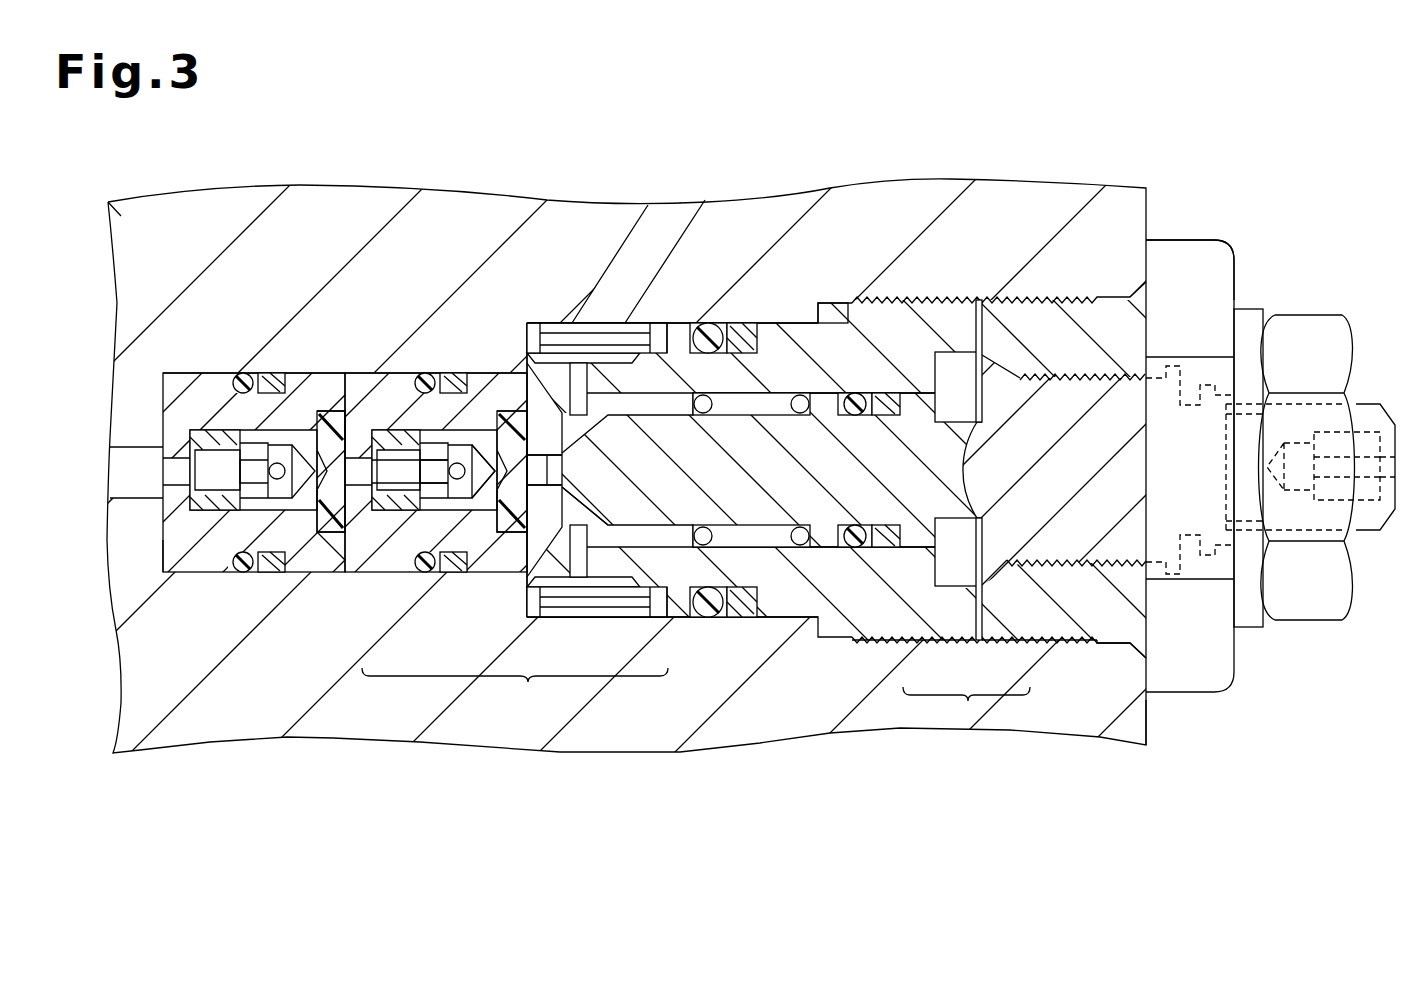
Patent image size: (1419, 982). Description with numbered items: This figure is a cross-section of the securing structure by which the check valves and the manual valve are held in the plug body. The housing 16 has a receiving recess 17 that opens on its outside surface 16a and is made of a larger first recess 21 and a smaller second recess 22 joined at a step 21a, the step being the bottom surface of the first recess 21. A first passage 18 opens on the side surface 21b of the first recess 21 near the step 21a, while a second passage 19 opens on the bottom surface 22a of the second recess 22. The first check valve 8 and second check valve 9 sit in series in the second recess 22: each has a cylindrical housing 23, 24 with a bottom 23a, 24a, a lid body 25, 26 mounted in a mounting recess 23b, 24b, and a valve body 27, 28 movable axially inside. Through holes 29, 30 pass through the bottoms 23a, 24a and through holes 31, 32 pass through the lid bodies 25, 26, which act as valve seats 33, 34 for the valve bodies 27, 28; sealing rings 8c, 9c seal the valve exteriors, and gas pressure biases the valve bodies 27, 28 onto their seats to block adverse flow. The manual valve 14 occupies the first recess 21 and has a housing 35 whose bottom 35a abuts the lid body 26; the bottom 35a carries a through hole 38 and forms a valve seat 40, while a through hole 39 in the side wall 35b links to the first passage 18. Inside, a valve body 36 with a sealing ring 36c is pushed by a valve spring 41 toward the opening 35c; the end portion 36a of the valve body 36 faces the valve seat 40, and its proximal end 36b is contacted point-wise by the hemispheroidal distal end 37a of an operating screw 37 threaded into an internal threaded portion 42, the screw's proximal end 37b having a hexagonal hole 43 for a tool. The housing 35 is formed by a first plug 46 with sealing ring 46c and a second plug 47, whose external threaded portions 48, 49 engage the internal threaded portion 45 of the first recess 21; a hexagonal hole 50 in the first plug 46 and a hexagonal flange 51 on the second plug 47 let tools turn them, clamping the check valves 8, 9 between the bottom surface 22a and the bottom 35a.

The first check valve 8 is at (293, 574).
The sealing ring 8c is at (232, 574).
The second check valve 9 is at (492, 574).
The sealing ring 9c is at (422, 574).
The manual valve 14 is at (1280, 195).
The housing 16 is at (813, 240).
The outside surface 16a is at (1147, 717).
The receiving recess 17 is at (515, 687).
The first passage 18 is at (650, 210).
The second passage 19 is at (118, 447).
The first recess 21 is at (690, 618).
The step 21a is at (528, 598).
The side surface 21b is at (668, 330).
The second recess 22 is at (410, 617).
The bottom surface 22a is at (163, 548).
The housing 23 is at (293, 385).
The bottom 23a is at (178, 385).
The mounting recess 23b is at (317, 520).
The housing 24 is at (477, 382).
The bottom 24a is at (352, 385).
The mounting recess 24b is at (515, 420).
The lid body 25 is at (333, 425).
The lid body 26 is at (530, 362).
The valve body 27 is at (218, 430).
The valve body 28 is at (402, 440).
The through hole 29 is at (163, 478).
The through hole 30 is at (360, 498).
The through hole 31 is at (330, 553).
The through hole 32 is at (467, 512).
The valve seat 33 is at (325, 435).
The valve seat 34 is at (488, 440).
The housing 35 is at (709, 491).
The bottom 35a is at (540, 325).
The side wall 35b is at (565, 618).
The opening 35c is at (1146, 378).
The valve body 36 is at (754, 485).
The piston end face 36a is at (590, 528).
The proximal end 36b is at (957, 552).
The sealing ring 36c is at (858, 548).
The operating screw 37 is at (1054, 485).
The distal end 37a is at (956, 387).
The proximal end 37b is at (1380, 404).
The through hole 38 is at (512, 458).
The through hole 39 is at (590, 388).
The valve seat 40 is at (553, 498).
The valve spring 41 is at (800, 548).
The internal threaded portion 42 is at (1040, 378).
The hexagonal hole 43 is at (1360, 540).
The internal threaded portion 45 is at (1085, 645).
The first plug 46 is at (905, 643).
The sealing ring 46c is at (712, 612).
The second plug 47 is at (1018, 643).
The external threaded portion 48 is at (852, 303).
The external threaded portion 49 is at (1000, 300).
The hexagonal hole 50 is at (979, 590).
The flange 51 is at (1236, 648).